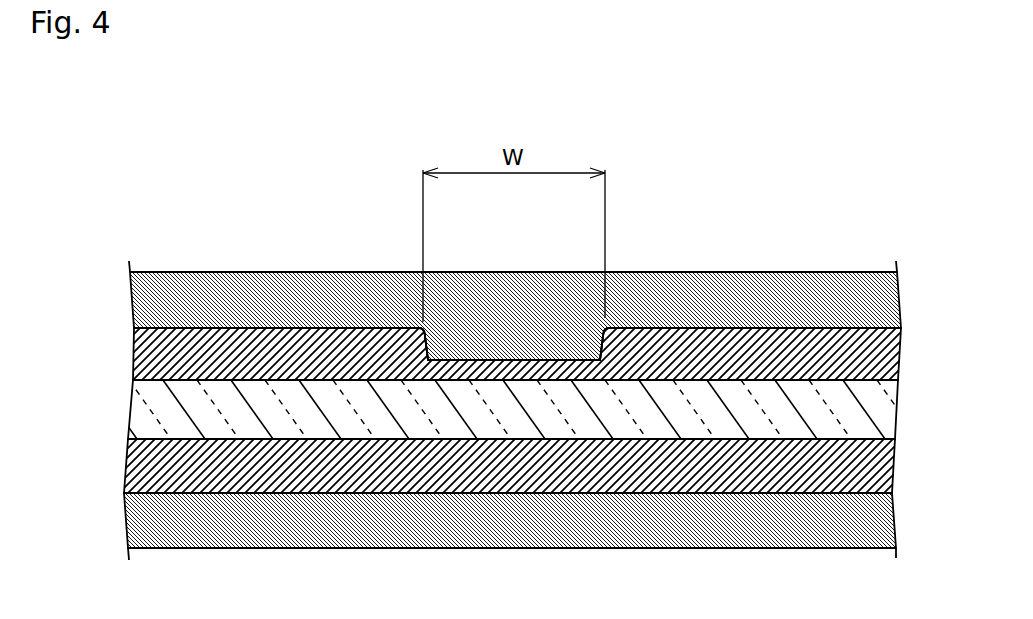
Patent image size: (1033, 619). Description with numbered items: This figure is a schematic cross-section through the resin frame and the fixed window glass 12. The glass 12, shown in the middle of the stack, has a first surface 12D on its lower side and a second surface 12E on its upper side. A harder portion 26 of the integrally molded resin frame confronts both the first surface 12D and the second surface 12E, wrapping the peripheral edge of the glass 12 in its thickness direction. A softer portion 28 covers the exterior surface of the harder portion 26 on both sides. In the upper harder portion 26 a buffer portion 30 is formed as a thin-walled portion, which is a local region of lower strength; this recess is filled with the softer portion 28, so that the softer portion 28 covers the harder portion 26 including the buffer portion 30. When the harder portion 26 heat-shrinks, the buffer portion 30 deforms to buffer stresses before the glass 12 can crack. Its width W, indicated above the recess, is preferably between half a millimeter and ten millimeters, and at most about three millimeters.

The fixed window glass 12 is at (890, 412).
The second surface 12E is at (158, 378).
The first surface 12D is at (165, 443).
The harder portion 26 is at (897, 357).
The softer portion 28 is at (730, 272).
The buffer portion 30 is at (510, 360).